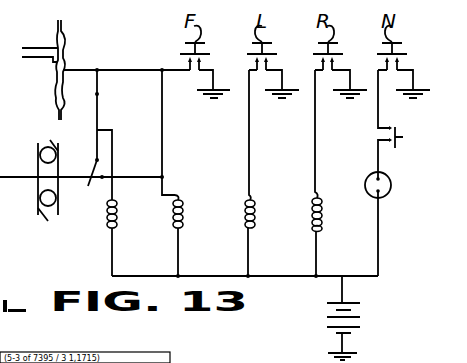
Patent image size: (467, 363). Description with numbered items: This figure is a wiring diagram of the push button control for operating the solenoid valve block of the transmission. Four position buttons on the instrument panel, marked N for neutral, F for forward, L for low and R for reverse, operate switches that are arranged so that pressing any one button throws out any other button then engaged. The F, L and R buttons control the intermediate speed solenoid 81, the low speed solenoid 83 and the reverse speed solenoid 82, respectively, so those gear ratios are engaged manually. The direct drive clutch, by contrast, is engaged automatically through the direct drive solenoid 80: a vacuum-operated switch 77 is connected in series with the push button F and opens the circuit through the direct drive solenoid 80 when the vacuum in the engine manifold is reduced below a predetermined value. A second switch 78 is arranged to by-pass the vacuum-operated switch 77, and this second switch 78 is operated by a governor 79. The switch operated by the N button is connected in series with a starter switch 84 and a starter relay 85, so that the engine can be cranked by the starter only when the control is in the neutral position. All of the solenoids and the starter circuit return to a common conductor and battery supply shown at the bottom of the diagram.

The vacuum-operated switch 77 is at (100, 80).
The second switch 78 is at (93, 168).
The governor 79 is at (43, 200).
The direct drive solenoid valve 80 is at (107, 225).
The intermediate speed solenoid valve 81 is at (184, 221).
The reverse speed solenoid valve 82 is at (257, 206).
The low speed solenoid valve 83 is at (323, 196).
The starter switch 84 is at (407, 121).
The starter relay 85 is at (391, 191).